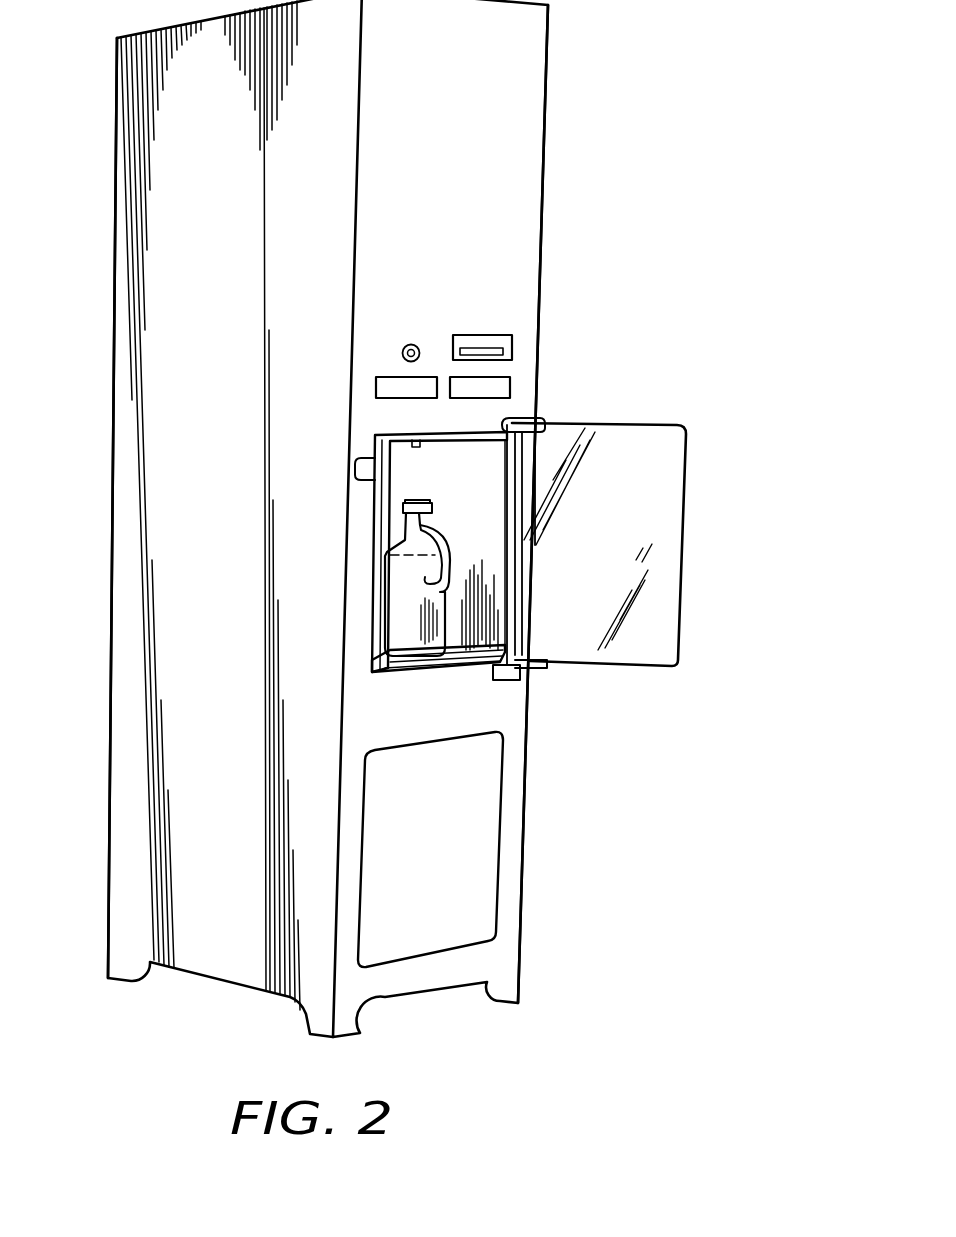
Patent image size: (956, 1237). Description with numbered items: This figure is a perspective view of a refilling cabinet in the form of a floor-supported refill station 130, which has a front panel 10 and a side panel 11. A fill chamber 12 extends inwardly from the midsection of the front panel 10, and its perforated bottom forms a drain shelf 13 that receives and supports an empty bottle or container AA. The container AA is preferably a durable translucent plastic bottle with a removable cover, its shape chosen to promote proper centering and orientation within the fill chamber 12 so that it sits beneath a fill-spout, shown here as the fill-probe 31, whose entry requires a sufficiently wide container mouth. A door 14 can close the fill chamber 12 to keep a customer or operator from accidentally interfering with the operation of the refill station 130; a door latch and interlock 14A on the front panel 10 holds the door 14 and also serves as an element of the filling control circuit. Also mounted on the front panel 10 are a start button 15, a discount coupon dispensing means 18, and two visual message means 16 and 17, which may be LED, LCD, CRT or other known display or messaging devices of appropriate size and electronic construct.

The front panel 10 is at (500, 153).
The side panel 11 is at (175, 212).
The fill chamber 12 is at (468, 517).
The drain shelf 13 is at (388, 677).
The door 14 is at (618, 645).
The door latch and interlock 14A is at (364, 466).
The start button 15 is at (418, 345).
The visual message means 16 is at (386, 378).
The visual message means 17 is at (497, 388).
The discount coupon dispensing means 18 is at (494, 334).
The fill-probe 31 is at (414, 446).
The refill station 130 is at (608, 78).
The container AA is at (403, 608).